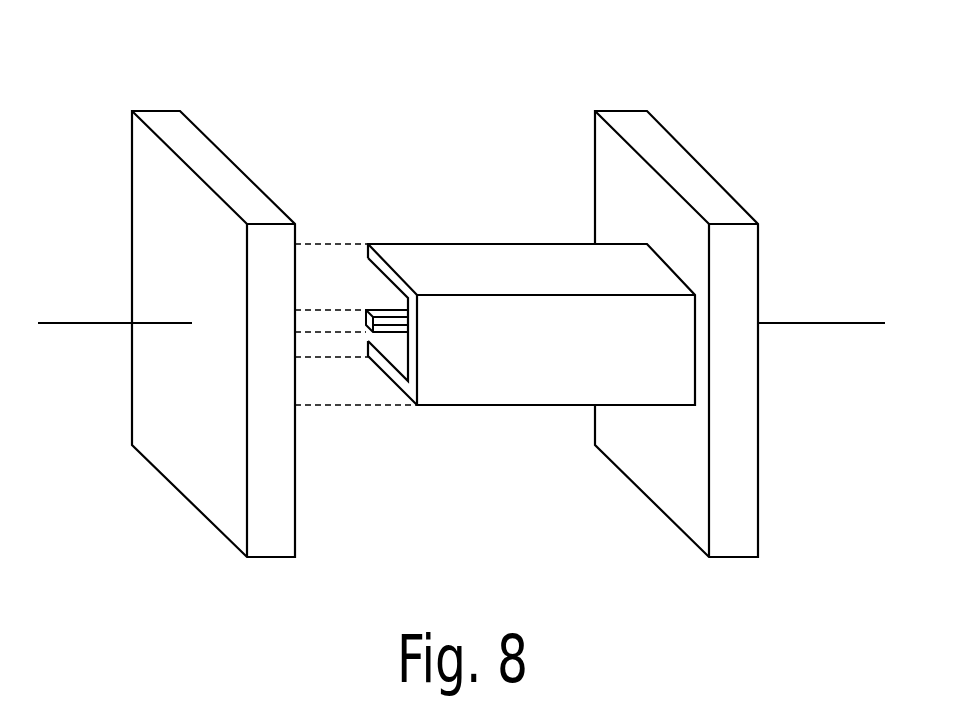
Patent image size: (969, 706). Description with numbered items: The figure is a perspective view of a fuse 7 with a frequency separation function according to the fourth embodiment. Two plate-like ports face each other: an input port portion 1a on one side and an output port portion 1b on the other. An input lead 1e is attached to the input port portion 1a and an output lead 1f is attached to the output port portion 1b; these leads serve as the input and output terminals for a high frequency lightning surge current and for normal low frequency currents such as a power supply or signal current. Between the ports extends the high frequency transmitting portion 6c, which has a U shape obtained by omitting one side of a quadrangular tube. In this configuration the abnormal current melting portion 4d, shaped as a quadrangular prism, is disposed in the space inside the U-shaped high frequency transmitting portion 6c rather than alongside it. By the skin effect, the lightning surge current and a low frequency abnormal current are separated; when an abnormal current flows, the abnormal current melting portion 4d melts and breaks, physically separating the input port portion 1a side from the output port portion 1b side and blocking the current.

The fuse with a frequency separation function 7 is at (505, 93).
The input port portion 1a is at (156, 110).
The output port portion 1b is at (622, 110).
The input lead 1e is at (82, 321).
The output lead 1f is at (840, 321).
The abnormal current melting portion 4d is at (375, 308).
The high frequency transmitting portion 6c is at (490, 243).